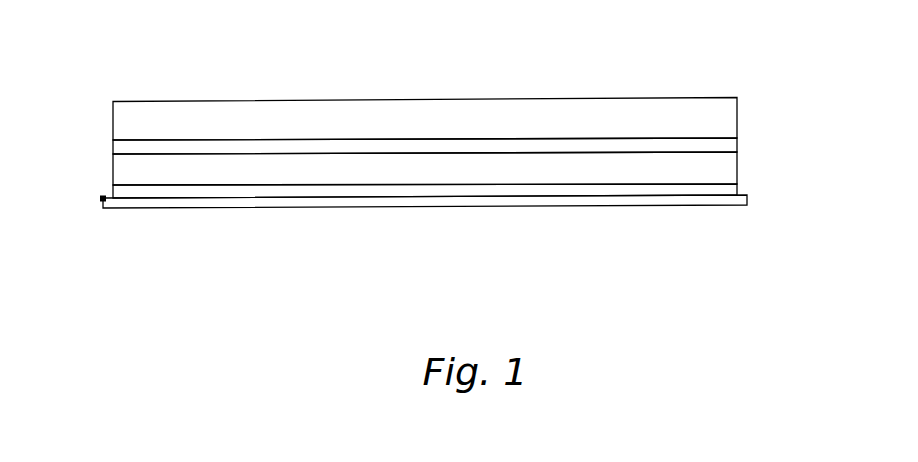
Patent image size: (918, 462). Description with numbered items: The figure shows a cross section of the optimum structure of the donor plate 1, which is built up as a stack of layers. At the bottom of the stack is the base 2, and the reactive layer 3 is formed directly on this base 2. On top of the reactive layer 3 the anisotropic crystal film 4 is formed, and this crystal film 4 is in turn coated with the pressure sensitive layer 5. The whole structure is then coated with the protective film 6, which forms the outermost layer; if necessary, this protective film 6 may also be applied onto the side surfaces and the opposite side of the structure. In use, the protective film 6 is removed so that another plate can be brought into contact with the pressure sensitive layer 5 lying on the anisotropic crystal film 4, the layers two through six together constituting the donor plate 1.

The donor plate 1 is at (90, 92).
The base 2 is at (716, 117).
The reactive layer 3 is at (727, 143).
The anisotropic crystal film 4 is at (727, 167).
The pressure sensitive layer 5 is at (723, 188).
The protective film 6 is at (722, 201).